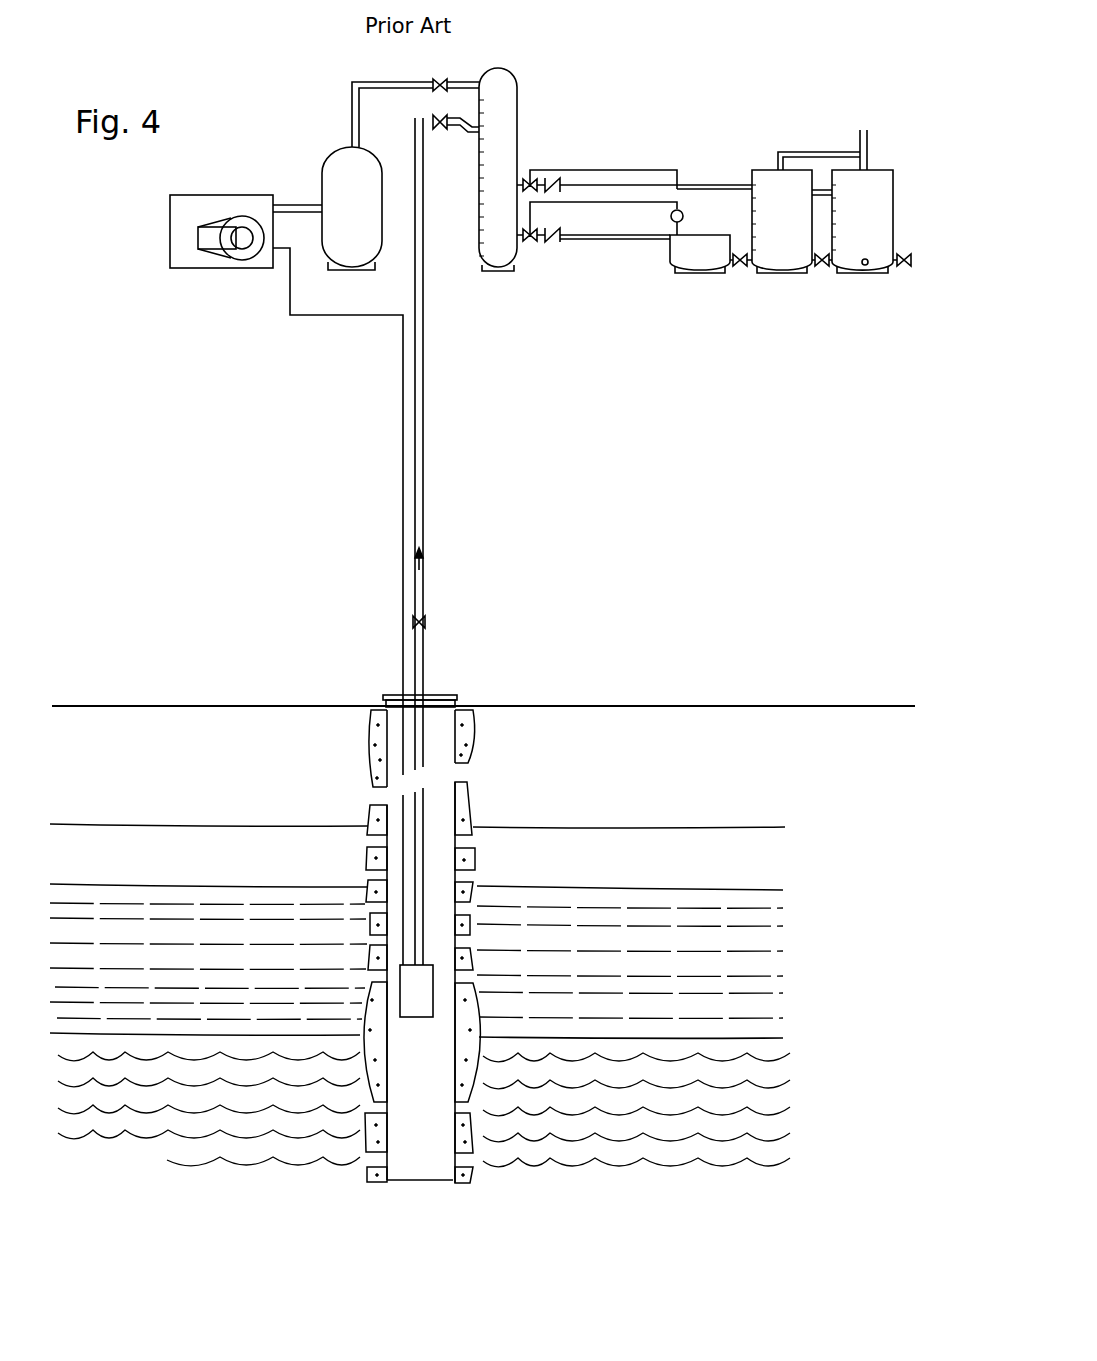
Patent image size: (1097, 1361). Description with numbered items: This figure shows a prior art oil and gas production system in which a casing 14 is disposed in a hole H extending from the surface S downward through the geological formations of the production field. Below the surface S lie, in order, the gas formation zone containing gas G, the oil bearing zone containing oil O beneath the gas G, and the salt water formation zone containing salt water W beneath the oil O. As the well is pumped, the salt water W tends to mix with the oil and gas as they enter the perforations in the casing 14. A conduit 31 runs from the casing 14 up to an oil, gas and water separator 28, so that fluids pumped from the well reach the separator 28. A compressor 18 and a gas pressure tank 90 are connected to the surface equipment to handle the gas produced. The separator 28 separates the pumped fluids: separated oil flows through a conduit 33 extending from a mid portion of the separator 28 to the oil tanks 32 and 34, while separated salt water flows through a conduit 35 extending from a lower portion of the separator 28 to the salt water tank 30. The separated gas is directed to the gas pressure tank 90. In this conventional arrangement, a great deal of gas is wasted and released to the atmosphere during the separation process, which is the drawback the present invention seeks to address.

The compressor 18 is at (286, 580).
The gas pressure tank 90 is at (400, 174).
The oil, gas and water separator 28 is at (475, 169).
The conduit 33 is at (597, 185).
The conduit 35 is at (615, 233).
The salt water tank 30 is at (711, 254).
The oil tank 32 is at (806, 212).
The oil tank 34 is at (871, 201).
The conduit 31 is at (427, 646).
The casing 14 is at (372, 774).
The surface S is at (215, 705).
The hole H is at (370, 733).
The gas G is at (417, 857).
The oil O is at (416, 970).
The salt water W is at (424, 1109).